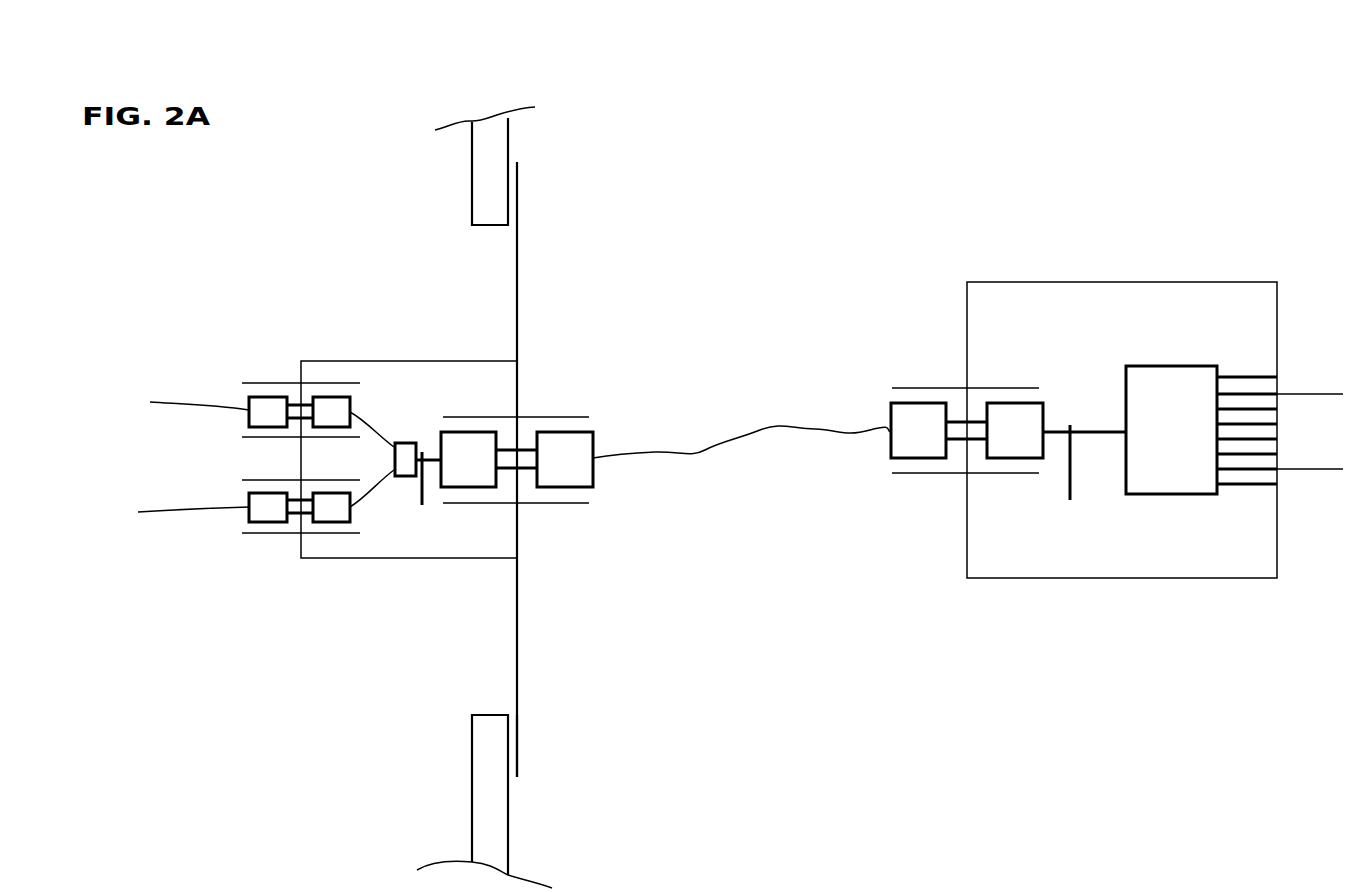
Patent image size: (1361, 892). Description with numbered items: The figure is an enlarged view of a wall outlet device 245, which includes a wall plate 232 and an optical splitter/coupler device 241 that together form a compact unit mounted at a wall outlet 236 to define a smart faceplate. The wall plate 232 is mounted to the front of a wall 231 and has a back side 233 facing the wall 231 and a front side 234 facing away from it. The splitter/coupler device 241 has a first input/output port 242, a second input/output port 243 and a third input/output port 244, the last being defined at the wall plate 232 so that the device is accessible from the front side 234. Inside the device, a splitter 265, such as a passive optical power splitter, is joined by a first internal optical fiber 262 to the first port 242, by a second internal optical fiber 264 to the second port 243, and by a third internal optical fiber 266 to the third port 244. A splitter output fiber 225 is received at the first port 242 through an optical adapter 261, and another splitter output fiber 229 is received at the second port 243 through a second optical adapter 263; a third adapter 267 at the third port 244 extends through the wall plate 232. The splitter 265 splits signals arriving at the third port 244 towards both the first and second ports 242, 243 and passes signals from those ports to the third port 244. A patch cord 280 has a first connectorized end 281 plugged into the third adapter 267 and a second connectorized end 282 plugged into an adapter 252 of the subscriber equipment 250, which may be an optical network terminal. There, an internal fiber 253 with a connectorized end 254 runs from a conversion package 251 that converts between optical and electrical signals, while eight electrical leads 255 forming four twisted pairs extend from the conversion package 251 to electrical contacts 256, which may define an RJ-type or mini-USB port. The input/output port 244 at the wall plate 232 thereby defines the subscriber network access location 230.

The splitter output fiber 225 is at (170, 397).
The splitter output fiber 229 is at (170, 507).
The subscriber network access location 230 is at (534, 376).
The wall 231 is at (476, 794).
The wall plate 232 is at (513, 722).
The back side 233 is at (480, 686).
The front side 234 is at (543, 686).
The wall outlet 236 is at (566, 565).
The optical splitter/coupler device 241 is at (350, 560).
The first input/output port 242 is at (297, 378).
The second input/output port 243 is at (297, 542).
The third input/output port 244 is at (513, 415).
The wall outlet device 245 is at (465, 294).
The subscriber equipment 250 is at (1060, 263).
The conversion package 251 is at (1141, 462).
The adapter 252 is at (944, 397).
The internal fiber 253 is at (1083, 478).
The connectorized end 254 is at (1015, 433).
The electrical leads 255 is at (1249, 388).
The electrical contacts 256 is at (1302, 470).
The optical adapter 261 is at (262, 380).
The first internal optical fiber 262 is at (368, 430).
The second optical adapter 263 is at (262, 542).
The second internal optical fiber 264 is at (367, 488).
The splitter 265 is at (403, 447).
The third internal optical fiber 266 is at (417, 495).
The third adapter 267 is at (477, 505).
The patch cord 280 is at (745, 435).
The first connectorized end 281 is at (583, 470).
The second connectorized end 282 is at (907, 452).